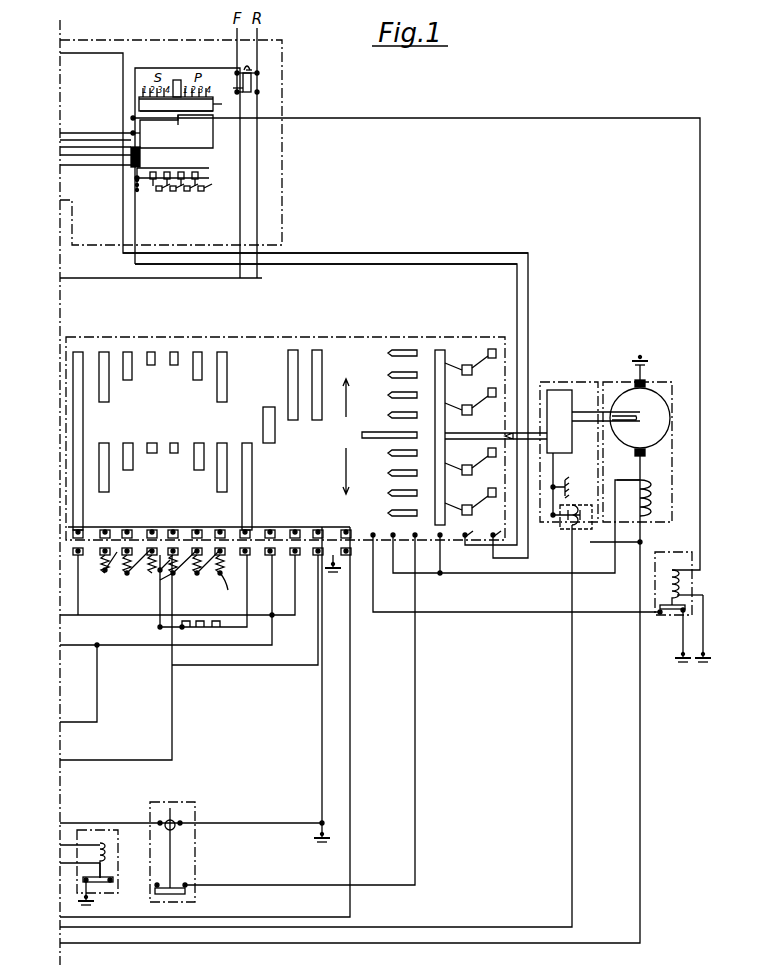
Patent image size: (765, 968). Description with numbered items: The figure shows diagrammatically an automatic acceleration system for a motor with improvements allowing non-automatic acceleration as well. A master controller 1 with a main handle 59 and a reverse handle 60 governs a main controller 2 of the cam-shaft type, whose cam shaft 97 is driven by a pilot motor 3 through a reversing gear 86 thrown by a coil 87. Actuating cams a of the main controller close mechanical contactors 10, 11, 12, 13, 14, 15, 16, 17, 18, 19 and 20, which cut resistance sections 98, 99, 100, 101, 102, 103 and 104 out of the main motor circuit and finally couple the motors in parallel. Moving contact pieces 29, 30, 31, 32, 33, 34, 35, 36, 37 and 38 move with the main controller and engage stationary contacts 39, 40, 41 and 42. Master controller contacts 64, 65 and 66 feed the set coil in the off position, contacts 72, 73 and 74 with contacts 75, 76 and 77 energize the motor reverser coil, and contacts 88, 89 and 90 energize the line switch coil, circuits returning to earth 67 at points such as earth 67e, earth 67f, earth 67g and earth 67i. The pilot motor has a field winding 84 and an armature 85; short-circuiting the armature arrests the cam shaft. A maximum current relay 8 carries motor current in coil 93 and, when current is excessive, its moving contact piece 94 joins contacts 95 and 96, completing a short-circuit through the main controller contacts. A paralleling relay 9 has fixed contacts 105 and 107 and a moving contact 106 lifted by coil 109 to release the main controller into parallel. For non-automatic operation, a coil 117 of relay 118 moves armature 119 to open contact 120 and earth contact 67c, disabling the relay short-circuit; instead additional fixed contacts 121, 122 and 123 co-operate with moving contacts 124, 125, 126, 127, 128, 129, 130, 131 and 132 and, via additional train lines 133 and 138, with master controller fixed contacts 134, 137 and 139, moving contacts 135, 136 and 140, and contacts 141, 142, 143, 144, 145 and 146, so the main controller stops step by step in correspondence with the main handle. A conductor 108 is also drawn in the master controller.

The master controller 1 is at (284, 97).
The main controller 2 is at (328, 337).
The pilot motor 3 is at (672, 398).
The maximum current relay 8 is at (196, 812).
The paralleling relay 9 is at (655, 560).
The mechanical contactor 10 is at (88, 527).
The mechanical contactor 11 is at (107, 439).
The mechanical contactor 12 is at (127, 439).
The mechanical contactor 13 is at (149, 439).
The mechanical contactor 14 is at (171, 439).
The mechanical contactor 15 is at (193, 439).
The mechanical contactor 16 is at (216, 439).
The mechanical contactor 17 is at (252, 527).
The mechanical contactor 18 is at (271, 532).
The mechanical contactor 19 is at (292, 532).
The mechanical contactor 20 is at (314, 532).
The moving contact piece 29 is at (390, 513).
The moving contact piece 30 is at (390, 493).
The moving contact piece 31 is at (390, 473).
The moving contact piece 32 is at (390, 453).
The moving contact piece 33 is at (362, 435).
The moving contact piece 34 is at (390, 415).
The moving contact piece 35 is at (390, 395).
The moving contact piece 36 is at (390, 375).
The moving contact piece 37 is at (390, 353).
The moving contact piece 38 is at (334, 516).
The stationary contact 39 is at (302, 709).
The stationary contact 40 is at (510, 526).
The stationary contact 41 is at (509, 572).
The stationary contact 42 is at (343, 532).
The main handle 59 is at (180, 79).
The reverse handle 60 is at (252, 62).
The stationary contact 64 is at (147, 155).
The moving contact piece 65 is at (172, 163).
The stationary contact 66 is at (134, 168).
The earth 67 is at (322, 844).
The earth contact 67c is at (100, 896).
The earth 67e is at (337, 575).
The earth 67f is at (643, 348).
The earth 67g is at (682, 667).
The earth 67i is at (712, 638).
The movable contact 72 is at (255, 81).
The fixed contact 73 is at (237, 72).
The fixed contact 74 is at (227, 88).
The contact 75 is at (139, 103).
The contact 76 is at (227, 101).
The contact 77 is at (138, 100).
The field winding 84 is at (648, 514).
The armature 85 is at (640, 422).
The reversing gear 86 is at (558, 382).
The coil 87 is at (569, 503).
The contact 88 is at (176, 132).
The contact 89 is at (190, 132).
The contact 90 is at (131, 133).
The coil 93 is at (163, 822).
The moving contact piece 94 is at (188, 893).
The contact 95 is at (188, 884).
The contact 96 is at (156, 884).
The cam shaft 97 is at (593, 453).
The resistance section 98 is at (105, 575).
The resistance section 99 is at (229, 584).
The resistance section 100 is at (127, 575).
The resistance section 101 is at (153, 577).
The resistance section 102 is at (178, 577).
The resistance section 103 is at (197, 575).
The resistance section 104 is at (212, 632).
The fixed contact 105 is at (660, 612).
The moving contact 106 is at (662, 605).
The fixed contact 107 is at (680, 612).
The conductor 108 is at (140, 111).
The coil 109 is at (683, 587).
The coil 117 is at (105, 845).
The relay 118 is at (95, 830).
The armature 119 is at (104, 877).
The contact 120 is at (111, 883).
The fixed contact 121 is at (438, 554).
The fixed contact 122 is at (463, 543).
The fixed contact 123 is at (490, 543).
The moving contact 124 is at (440, 450).
The moving contact 125 is at (470, 500).
The moving contact 126 is at (476, 473).
The moving contact 127 is at (472, 457).
The moving contact 128 is at (496, 440).
The moving contact 129 is at (472, 397).
The moving contact 130 is at (476, 412).
The moving contact 131 is at (472, 356).
The moving contact 132 is at (476, 373).
The additional train line 133 is at (462, 253).
The fixed contact 134 is at (136, 185).
The moving contact 135 is at (146, 188).
The moving contact 136 is at (200, 167).
The fixed contact 137 is at (136, 180).
The additional train line 138 is at (462, 264).
The fixed contact 139 is at (136, 190).
The moving contact 140 is at (157, 202).
The contact 141 is at (170, 188).
The contact 142 is at (183, 202).
The contact 143 is at (192, 188).
The contact 144 is at (205, 202).
The contact 145 is at (205, 176).
The contact 146 is at (219, 194).
The actuating cam a is at (160, 380).